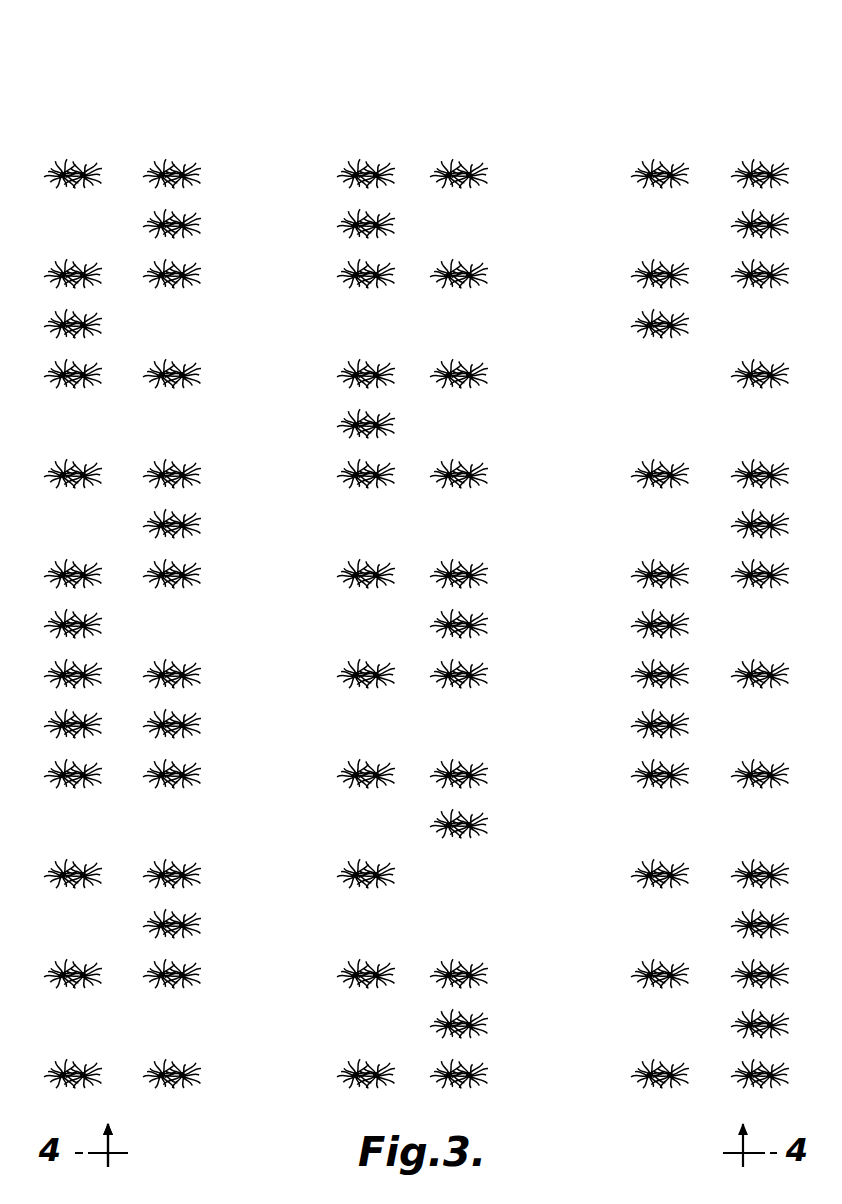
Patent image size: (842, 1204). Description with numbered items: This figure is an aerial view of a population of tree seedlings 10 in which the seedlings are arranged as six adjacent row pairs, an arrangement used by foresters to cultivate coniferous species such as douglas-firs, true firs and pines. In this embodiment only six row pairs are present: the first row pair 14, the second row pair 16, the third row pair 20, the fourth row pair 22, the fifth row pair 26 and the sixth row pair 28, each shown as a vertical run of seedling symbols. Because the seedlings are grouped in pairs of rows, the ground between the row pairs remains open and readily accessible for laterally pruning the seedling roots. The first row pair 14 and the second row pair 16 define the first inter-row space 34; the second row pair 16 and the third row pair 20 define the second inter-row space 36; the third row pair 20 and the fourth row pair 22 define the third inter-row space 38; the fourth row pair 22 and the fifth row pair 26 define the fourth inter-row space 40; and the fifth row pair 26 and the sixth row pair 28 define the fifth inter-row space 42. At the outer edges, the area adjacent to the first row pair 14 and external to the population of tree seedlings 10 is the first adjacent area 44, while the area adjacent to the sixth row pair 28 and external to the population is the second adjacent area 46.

The population of tree seedlings 10 is at (315, 1105).
The first row pair 14 is at (72, 130).
The second row pair 16 is at (175, 130).
The third row pair 20 is at (370, 130).
The fourth row pair 22 is at (468, 130).
The fifth row pair 26 is at (661, 130).
The sixth row pair 28 is at (765, 130).
The first inter-row space 34 is at (126, 92).
The second inter-row space 36 is at (272, 91).
The third inter-row space 38 is at (421, 91).
The fourth inter-row space 40 is at (566, 91).
The fifth inter-row space 42 is at (718, 91).
The first adjacent area 44 is at (33, 92).
The second adjacent area 46 is at (797, 91).